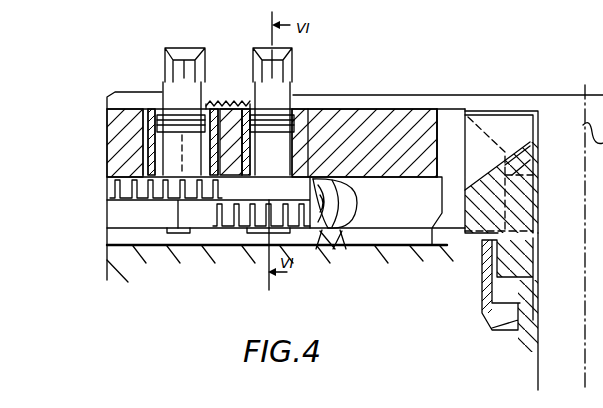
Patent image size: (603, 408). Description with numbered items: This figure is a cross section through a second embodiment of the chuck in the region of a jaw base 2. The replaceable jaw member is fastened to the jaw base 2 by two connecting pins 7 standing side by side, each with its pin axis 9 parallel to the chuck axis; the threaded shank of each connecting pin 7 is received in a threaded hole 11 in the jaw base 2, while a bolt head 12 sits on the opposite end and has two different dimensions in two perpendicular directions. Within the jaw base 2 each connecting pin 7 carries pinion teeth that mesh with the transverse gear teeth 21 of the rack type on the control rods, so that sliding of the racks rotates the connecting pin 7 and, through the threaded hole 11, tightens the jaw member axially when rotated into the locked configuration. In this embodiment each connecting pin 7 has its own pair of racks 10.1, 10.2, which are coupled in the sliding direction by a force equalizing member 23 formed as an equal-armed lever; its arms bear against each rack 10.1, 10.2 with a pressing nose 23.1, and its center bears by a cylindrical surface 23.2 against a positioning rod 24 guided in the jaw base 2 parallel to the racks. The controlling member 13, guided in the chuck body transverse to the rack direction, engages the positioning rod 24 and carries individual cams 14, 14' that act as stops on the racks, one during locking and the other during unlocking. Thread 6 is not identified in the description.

The jaw base 2 is at (114, 132).
The thread 6 is at (214, 101).
The connecting pin 7 is at (160, 97).
The pin axis 9 is at (168, 73).
The rack 10.1 is at (211, 207).
The rack 10.2 is at (171, 214).
The threaded hole 11 is at (108, 170).
The bolt head 12 is at (193, 52).
The controlling member 13 is at (540, 241).
The cam 14 is at (501, 155).
The cam 14' is at (537, 155).
The transverse gear teeth 21 is at (105, 196).
The force equalizing member 23 is at (343, 181).
The pressing nose 23.1 is at (328, 238).
The cylindrical surface 23.2 is at (358, 209).
The positioning rod 24 is at (406, 189).